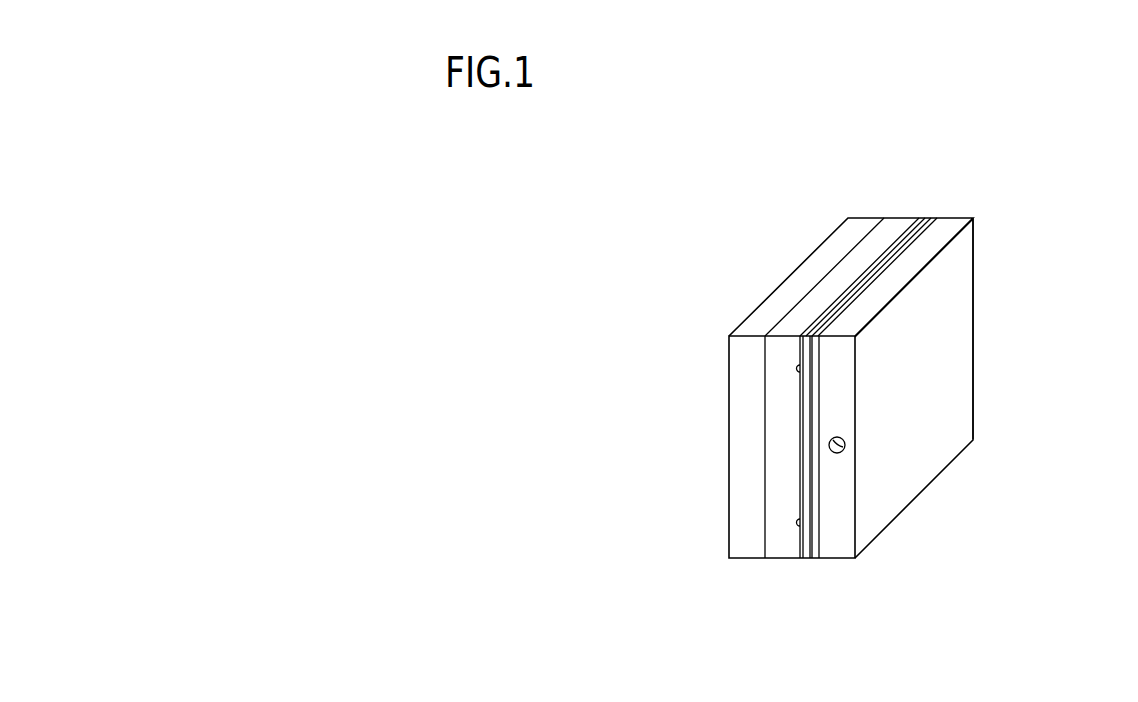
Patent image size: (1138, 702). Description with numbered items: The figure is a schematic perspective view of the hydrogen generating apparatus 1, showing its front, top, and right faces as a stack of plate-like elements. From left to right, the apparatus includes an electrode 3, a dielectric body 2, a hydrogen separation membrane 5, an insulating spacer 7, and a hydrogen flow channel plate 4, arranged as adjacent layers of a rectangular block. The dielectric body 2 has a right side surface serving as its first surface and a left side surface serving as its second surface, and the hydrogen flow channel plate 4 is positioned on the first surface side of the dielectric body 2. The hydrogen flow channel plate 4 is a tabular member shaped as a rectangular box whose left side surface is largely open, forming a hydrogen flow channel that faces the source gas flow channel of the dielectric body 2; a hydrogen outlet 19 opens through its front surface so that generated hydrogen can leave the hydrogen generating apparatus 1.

The hydrogen generating apparatus 1 is at (1020, 235).
The dielectric body 2 is at (900, 222).
The electrode 3 is at (862, 222).
The hydrogen flow channel plate 4 is at (953, 222).
The hydrogen separation membrane 5 is at (922, 217).
The insulating spacer 7 is at (933, 217).
The hydrogen outlet 19 is at (832, 453).